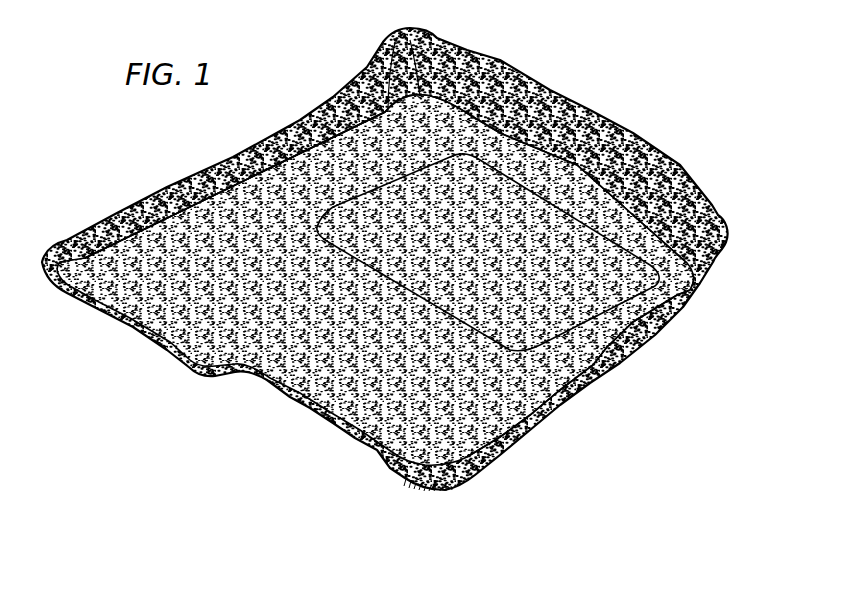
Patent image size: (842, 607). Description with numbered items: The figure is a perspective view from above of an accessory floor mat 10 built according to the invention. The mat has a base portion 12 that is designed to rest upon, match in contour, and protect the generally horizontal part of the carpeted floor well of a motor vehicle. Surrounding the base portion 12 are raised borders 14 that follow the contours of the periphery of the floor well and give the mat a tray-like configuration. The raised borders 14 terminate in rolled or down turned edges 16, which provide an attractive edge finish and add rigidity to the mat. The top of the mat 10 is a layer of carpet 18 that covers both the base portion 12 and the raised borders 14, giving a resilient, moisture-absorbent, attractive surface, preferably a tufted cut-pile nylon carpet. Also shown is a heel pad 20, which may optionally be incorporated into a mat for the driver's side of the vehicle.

The accessory floor mat 10 is at (553, 48).
The base portion 12 is at (355, 360).
The raised borders 14 is at (341, 80).
The rolled or down turned edges 16 is at (610, 370).
The layer of carpet 18 is at (180, 227).
The heel pad 20 is at (540, 230).